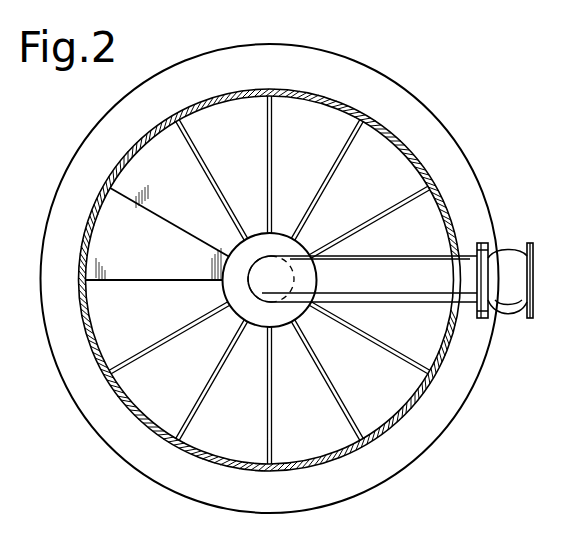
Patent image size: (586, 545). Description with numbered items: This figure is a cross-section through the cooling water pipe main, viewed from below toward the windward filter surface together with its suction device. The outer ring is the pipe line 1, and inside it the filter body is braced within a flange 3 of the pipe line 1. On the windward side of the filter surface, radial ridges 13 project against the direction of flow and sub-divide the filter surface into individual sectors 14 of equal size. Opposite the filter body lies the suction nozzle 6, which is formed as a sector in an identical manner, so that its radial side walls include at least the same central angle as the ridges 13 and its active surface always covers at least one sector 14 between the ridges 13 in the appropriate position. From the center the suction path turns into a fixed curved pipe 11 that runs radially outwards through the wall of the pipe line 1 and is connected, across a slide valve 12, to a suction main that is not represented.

The pipe line 1 is at (445, 202).
The flange 3 is at (440, 143).
The suction nozzle 6 is at (140, 268).
The curved pipe 11 is at (426, 290).
The slide valve 12 is at (510, 302).
The radial ridges 13 is at (222, 198).
The sectors 14 is at (273, 273).